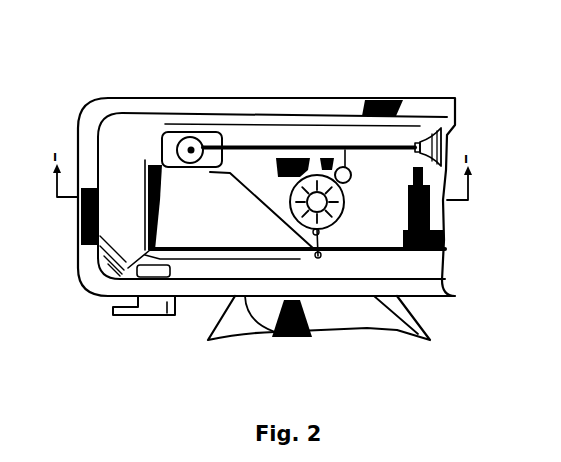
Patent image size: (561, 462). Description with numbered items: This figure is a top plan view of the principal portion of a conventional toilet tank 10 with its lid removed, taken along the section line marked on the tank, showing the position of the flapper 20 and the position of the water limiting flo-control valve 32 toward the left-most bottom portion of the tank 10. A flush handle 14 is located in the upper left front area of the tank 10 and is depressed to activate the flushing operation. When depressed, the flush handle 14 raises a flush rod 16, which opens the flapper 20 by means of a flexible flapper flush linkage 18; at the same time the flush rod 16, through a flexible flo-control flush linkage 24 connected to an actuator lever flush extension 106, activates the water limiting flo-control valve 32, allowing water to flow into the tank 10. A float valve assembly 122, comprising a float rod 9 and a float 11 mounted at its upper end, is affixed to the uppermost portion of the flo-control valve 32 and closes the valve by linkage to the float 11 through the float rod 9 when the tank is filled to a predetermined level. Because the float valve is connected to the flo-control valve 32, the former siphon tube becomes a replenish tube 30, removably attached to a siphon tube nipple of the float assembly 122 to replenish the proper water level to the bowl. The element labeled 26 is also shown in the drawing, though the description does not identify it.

The float rod 9 is at (357, 146).
The tank 10 is at (78, 137).
The float 11 is at (427, 134).
The flush handle 14 is at (145, 317).
The flush rod 16 is at (213, 259).
The flexible flapper flush linkage 18 is at (349, 186).
The flapper 20 is at (355, 180).
The flexible flo-control flush linkage 24 is at (285, 215).
The base stand 26 is at (366, 172).
The replenish tube 30 is at (380, 160).
The water limiting flo-control valve 32 is at (175, 148).
The actuator lever flush extension 106 is at (210, 173).
The float valve assembly 122 is at (181, 144).